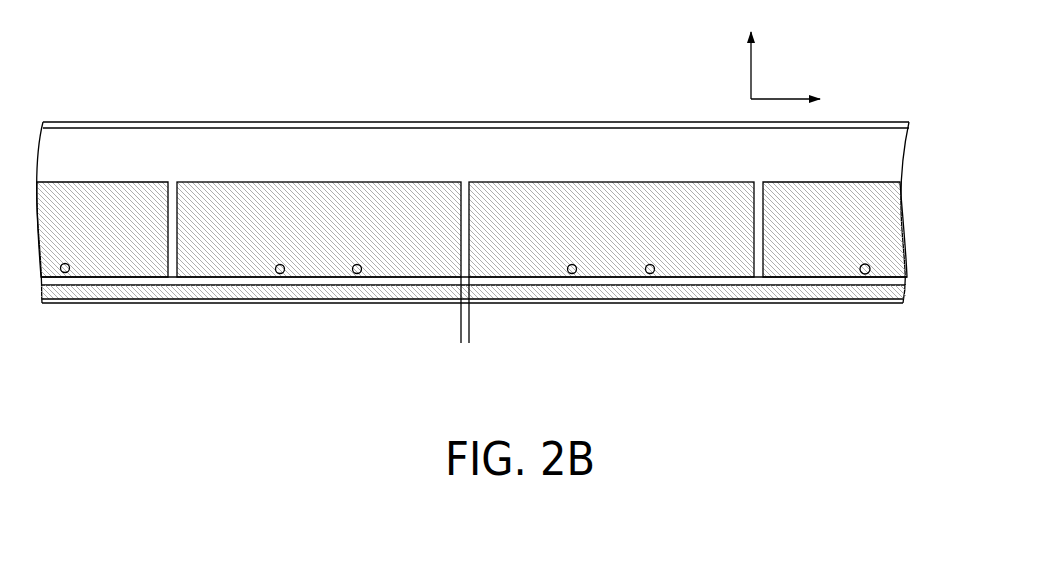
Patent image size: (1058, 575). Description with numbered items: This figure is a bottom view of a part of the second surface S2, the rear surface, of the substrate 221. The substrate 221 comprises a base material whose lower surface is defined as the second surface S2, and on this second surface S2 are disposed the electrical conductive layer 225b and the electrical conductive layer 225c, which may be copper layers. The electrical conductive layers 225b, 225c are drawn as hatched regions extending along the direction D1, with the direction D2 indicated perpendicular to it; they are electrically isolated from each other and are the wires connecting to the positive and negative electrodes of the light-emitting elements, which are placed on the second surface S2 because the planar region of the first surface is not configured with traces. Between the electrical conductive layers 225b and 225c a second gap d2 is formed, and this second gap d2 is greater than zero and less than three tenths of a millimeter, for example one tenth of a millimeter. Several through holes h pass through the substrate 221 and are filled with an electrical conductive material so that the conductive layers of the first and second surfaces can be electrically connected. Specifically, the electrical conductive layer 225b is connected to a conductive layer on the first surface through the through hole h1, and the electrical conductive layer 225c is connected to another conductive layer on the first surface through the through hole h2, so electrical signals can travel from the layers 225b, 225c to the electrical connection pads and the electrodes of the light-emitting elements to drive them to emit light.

The substrate 221 is at (126, 121).
The second surface S2 is at (306, 145).
The electrical conductive layer 225b is at (237, 258).
The electrical conductive layer 225c is at (693, 263).
The through hole h is at (65, 273).
The through hole h1 is at (357, 274).
The through hole h2 is at (572, 274).
The second gap d2 is at (503, 339).
The direction D1 is at (800, 100).
The direction D2 is at (755, 53).